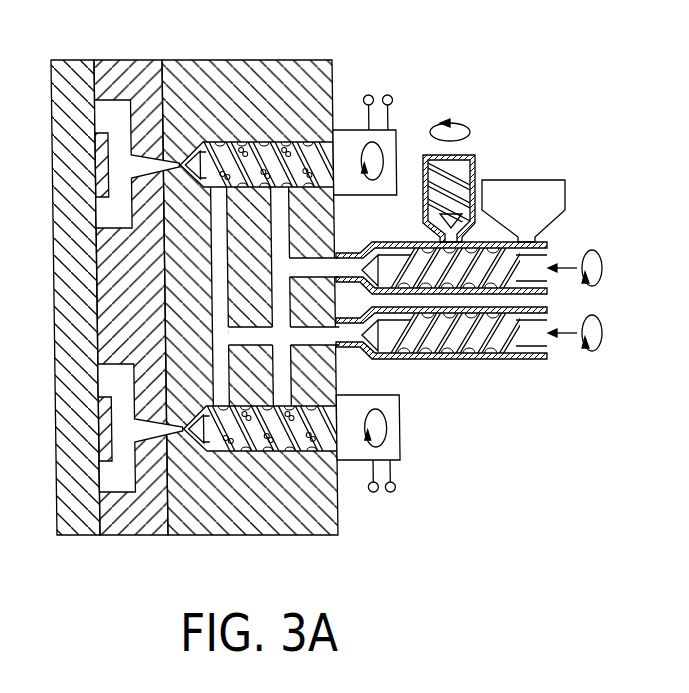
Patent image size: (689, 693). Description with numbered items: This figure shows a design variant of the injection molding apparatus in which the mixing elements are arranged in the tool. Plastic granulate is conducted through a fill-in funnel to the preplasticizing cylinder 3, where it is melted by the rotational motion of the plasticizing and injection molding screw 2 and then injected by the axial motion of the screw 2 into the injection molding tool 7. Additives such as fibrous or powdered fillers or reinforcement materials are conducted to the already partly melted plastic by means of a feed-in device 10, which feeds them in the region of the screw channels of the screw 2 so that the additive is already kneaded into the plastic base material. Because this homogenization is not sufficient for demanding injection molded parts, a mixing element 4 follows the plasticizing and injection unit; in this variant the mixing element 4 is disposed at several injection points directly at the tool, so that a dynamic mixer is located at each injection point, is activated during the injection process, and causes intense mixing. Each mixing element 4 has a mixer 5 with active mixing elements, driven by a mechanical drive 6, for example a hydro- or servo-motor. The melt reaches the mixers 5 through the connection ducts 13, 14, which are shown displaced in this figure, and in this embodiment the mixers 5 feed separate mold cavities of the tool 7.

The plasticizing and injection molding screw 2 is at (473, 343).
The preplasticizing cylinder 3 is at (387, 242).
The mixing element 4 is at (190, 76).
The mixer 5 is at (221, 152).
The mechanical drive 6 is at (344, 137).
The injection molding tool 7 is at (125, 67).
The feed-in device 10 is at (470, 153).
The connection duct 13 is at (223, 393).
The connection duct 14 is at (280, 195).